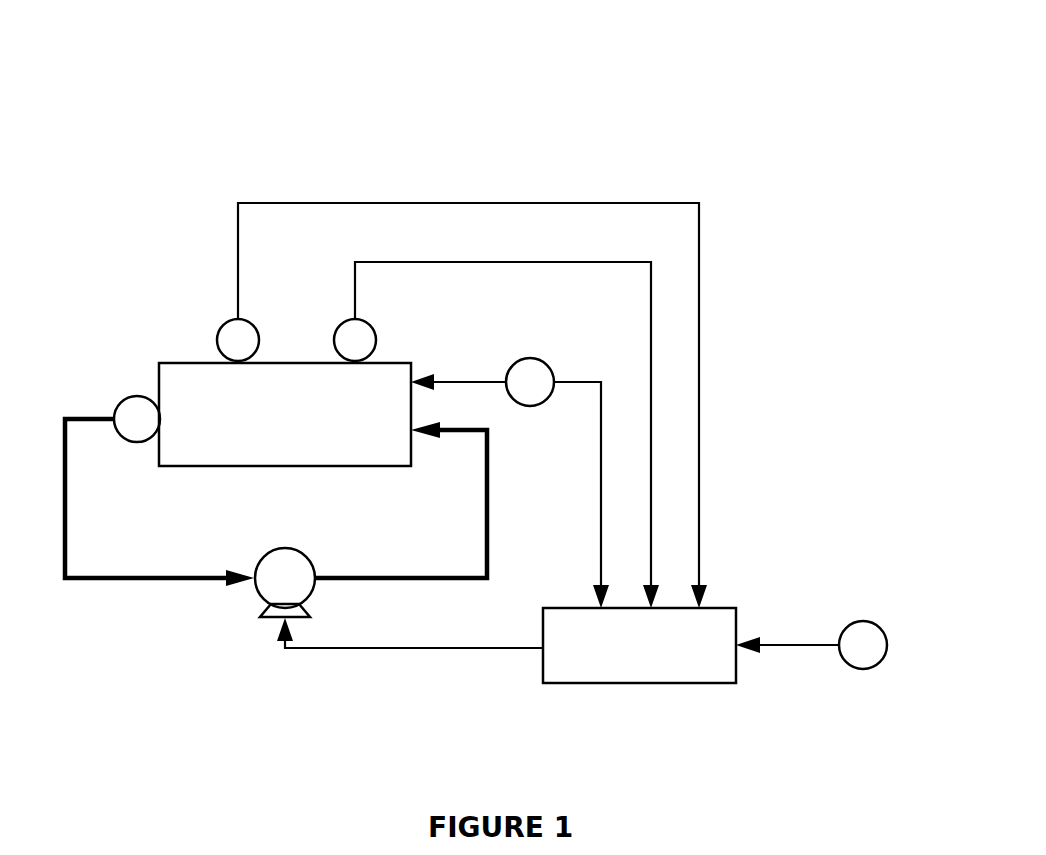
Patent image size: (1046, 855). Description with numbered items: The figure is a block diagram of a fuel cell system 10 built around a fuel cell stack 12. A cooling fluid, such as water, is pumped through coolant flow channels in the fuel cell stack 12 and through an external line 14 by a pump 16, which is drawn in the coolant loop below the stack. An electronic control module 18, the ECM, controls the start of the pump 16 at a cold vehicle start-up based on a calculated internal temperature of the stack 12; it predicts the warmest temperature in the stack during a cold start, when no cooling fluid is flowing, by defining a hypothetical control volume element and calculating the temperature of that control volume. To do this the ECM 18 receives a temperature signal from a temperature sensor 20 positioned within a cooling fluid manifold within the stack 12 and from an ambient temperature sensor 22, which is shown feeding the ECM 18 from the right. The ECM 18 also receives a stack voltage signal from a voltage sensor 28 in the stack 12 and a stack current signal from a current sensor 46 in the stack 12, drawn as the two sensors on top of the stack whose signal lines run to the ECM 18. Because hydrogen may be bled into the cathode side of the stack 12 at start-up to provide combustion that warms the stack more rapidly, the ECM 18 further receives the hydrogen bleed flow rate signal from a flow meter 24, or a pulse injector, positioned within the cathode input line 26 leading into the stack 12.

The fuel cell system 10 is at (621, 112).
The fuel cell stack 12 is at (188, 362).
The external line 14 is at (198, 580).
The pump 16 is at (286, 548).
The electronic control module (ECM) 18 is at (541, 665).
The temperature sensor 20 is at (131, 397).
The ambient temperature sensor 22 is at (863, 620).
The flow meter 24 is at (530, 357).
The cathode input line 26 is at (480, 381).
The voltage sensor 28 is at (336, 340).
The current sensor 46 is at (216, 338).